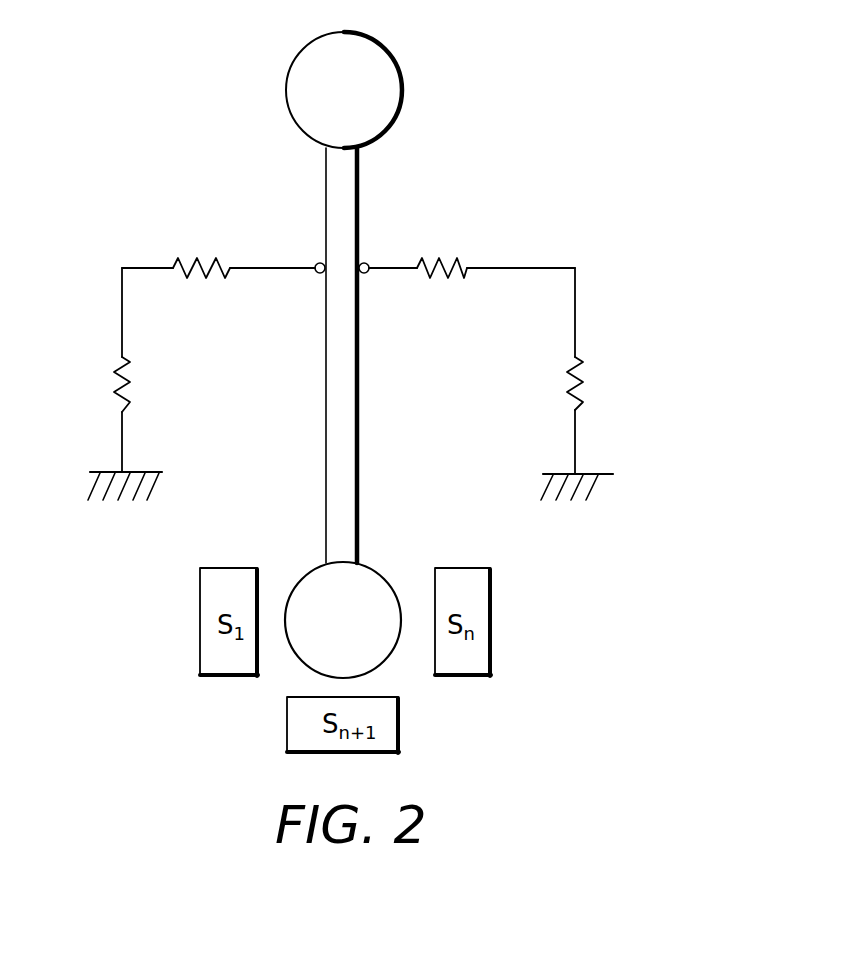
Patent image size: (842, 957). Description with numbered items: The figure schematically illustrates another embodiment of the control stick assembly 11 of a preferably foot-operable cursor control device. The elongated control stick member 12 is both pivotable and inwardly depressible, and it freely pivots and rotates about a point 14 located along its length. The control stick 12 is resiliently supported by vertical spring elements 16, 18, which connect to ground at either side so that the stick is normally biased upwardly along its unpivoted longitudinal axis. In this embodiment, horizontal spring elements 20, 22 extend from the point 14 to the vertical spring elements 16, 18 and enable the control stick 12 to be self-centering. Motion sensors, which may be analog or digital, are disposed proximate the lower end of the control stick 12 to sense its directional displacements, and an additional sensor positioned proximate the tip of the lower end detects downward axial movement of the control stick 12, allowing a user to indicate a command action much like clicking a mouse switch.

The control stick assembly 11 is at (493, 70).
The control stick member 12 is at (395, 58).
The point 14 is at (366, 262).
The vertical spring element 16 is at (130, 391).
The vertical spring element 18 is at (577, 397).
The horizontal spring element 20 is at (207, 275).
The horizontal spring element 22 is at (448, 275).